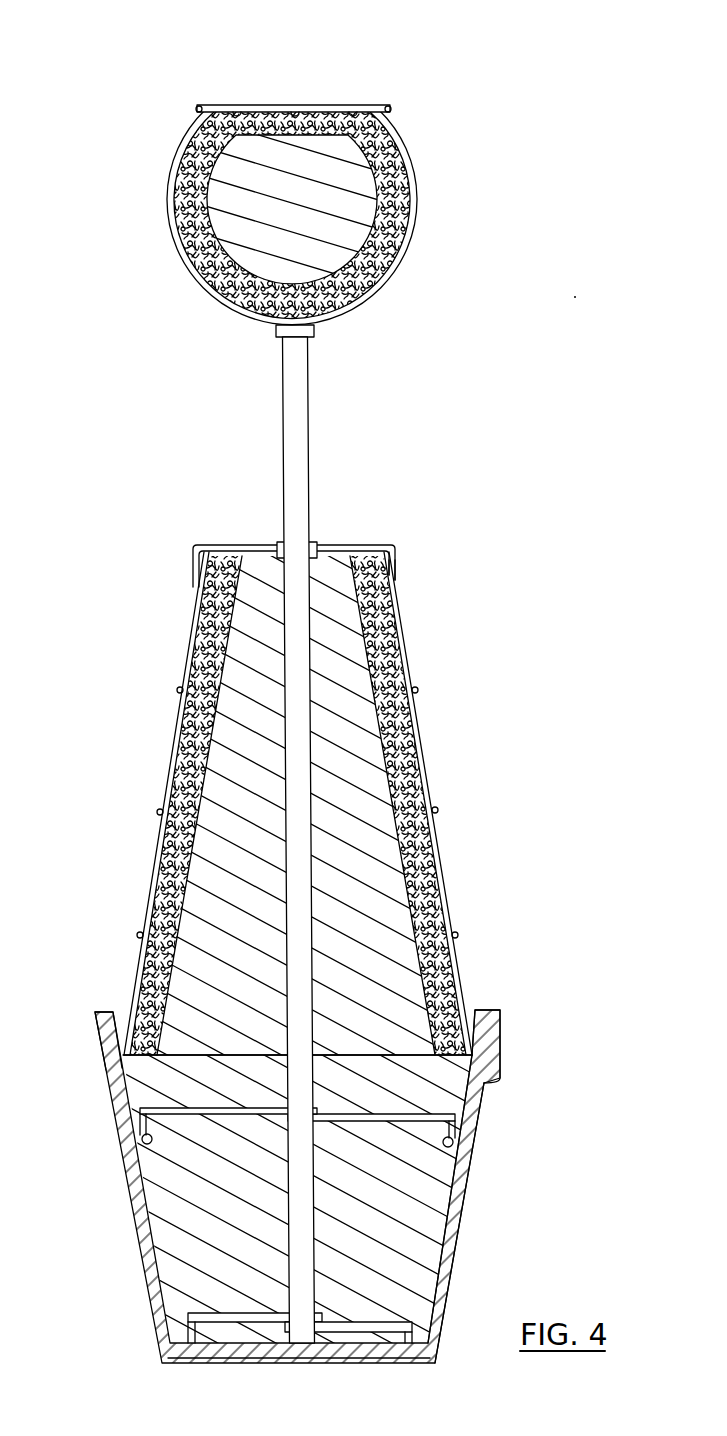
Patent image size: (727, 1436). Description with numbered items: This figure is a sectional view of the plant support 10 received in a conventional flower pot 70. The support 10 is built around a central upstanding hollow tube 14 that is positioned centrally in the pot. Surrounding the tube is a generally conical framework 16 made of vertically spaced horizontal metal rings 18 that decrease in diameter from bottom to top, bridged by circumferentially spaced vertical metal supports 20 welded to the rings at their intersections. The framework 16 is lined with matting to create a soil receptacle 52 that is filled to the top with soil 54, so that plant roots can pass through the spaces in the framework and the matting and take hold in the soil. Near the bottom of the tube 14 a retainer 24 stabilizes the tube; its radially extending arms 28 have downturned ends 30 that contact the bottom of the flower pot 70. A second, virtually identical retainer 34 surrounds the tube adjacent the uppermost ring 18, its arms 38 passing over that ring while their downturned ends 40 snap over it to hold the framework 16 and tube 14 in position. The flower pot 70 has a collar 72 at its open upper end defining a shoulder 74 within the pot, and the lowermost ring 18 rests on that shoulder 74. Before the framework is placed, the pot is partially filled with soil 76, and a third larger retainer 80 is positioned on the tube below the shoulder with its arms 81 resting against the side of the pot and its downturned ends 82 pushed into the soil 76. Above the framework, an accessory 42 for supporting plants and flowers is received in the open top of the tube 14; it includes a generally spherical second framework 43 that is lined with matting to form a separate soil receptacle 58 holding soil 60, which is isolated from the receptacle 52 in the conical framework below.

The support 10 is at (294, 799).
The tube 14 is at (302, 392).
The framework 16 is at (158, 784).
The rings 18 is at (309, 1138).
The vertical metal supports 20 is at (436, 845).
The retainer 24 is at (253, 1330).
The arms 28 is at (362, 1335).
The downturned ends 30 is at (215, 1336).
The second retainer 34 is at (395, 538).
The arms 38 is at (345, 547).
The downturned ends 40 is at (394, 564).
The accessory 42 is at (276, 175).
The second framework 43 is at (175, 146).
The soil receptacle 52 is at (250, 540).
The soil 54 is at (358, 747).
The soil receptacle 58 is at (320, 100).
The soil 60 is at (362, 180).
The flower pot 70 is at (480, 1100).
The collar 72 is at (492, 1040).
The shoulder 74 is at (104, 1068).
The soil 76 is at (420, 1212).
The third retainer 80 is at (286, 1169).
The arms 81 is at (168, 1110).
The downturned ends 82 is at (150, 1142).